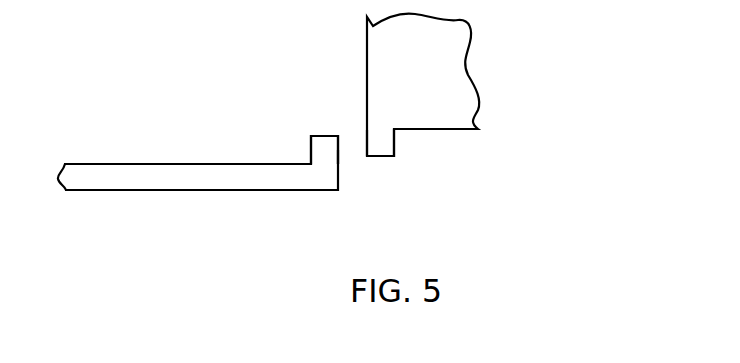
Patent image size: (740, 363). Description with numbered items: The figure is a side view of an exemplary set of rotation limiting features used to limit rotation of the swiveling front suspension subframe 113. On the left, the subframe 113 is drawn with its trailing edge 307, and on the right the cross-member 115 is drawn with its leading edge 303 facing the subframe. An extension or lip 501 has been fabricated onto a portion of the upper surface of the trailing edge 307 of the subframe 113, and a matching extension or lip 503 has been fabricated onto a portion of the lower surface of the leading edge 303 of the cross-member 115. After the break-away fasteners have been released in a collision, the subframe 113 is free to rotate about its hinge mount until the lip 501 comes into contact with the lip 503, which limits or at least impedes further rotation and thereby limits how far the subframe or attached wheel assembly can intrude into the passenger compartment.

The subframe 113 is at (258, 188).
The cross-member 115 is at (433, 83).
The leading edge 303 is at (361, 137).
The trailing edge 307 is at (345, 161).
The lip 501 is at (327, 143).
The lip 503 is at (381, 143).